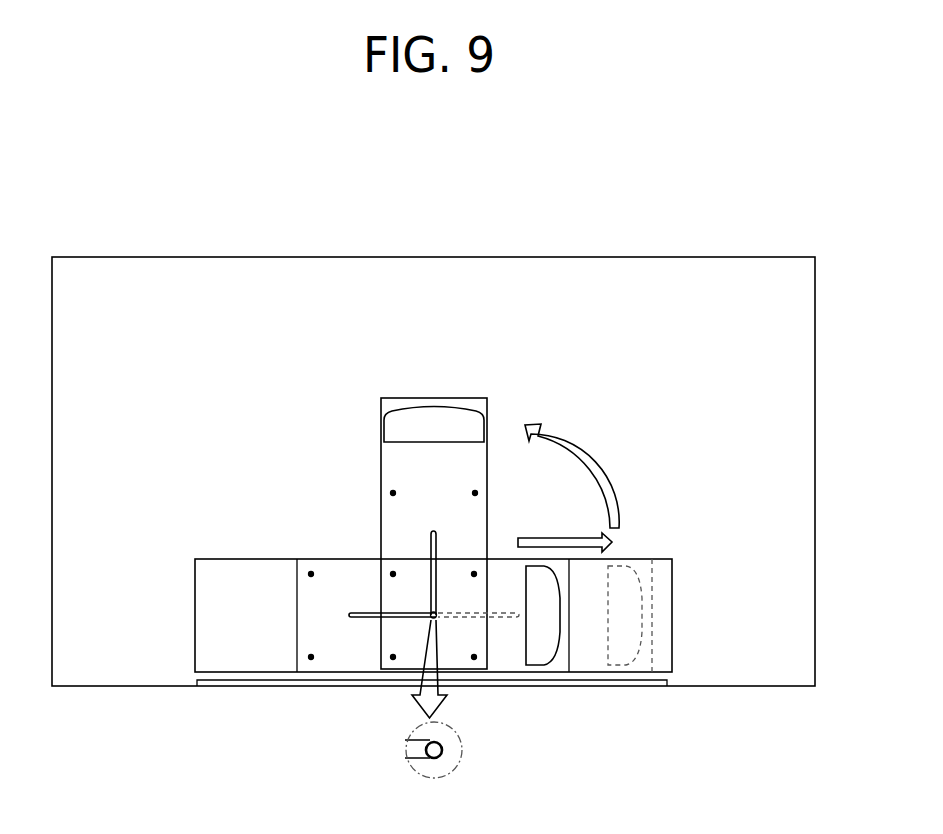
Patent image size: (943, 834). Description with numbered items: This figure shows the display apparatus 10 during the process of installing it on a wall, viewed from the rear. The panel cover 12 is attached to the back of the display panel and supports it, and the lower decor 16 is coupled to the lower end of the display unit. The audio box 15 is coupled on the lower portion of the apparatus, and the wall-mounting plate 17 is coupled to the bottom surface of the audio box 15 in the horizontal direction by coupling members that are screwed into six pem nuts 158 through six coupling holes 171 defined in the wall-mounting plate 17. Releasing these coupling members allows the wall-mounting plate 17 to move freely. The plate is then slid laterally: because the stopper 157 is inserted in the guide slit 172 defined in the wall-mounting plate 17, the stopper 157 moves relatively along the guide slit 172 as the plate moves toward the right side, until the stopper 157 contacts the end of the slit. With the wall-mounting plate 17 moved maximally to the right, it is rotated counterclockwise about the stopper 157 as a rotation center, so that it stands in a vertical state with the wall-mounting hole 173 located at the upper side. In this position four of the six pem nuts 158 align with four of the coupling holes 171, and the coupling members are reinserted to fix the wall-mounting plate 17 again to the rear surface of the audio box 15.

The display apparatus 10 is at (485, 188).
The panel cover 12 is at (705, 266).
The audio box 15 is at (207, 613).
The lower decor 16 is at (130, 688).
The wall-mounting plate 17 is at (386, 458).
The stopper 157 is at (442, 749).
The pem nuts 158 is at (311, 574).
The coupling holes 171 is at (393, 493).
The guide slit 172 is at (423, 738).
The wall-mounting hole 173 is at (446, 408).